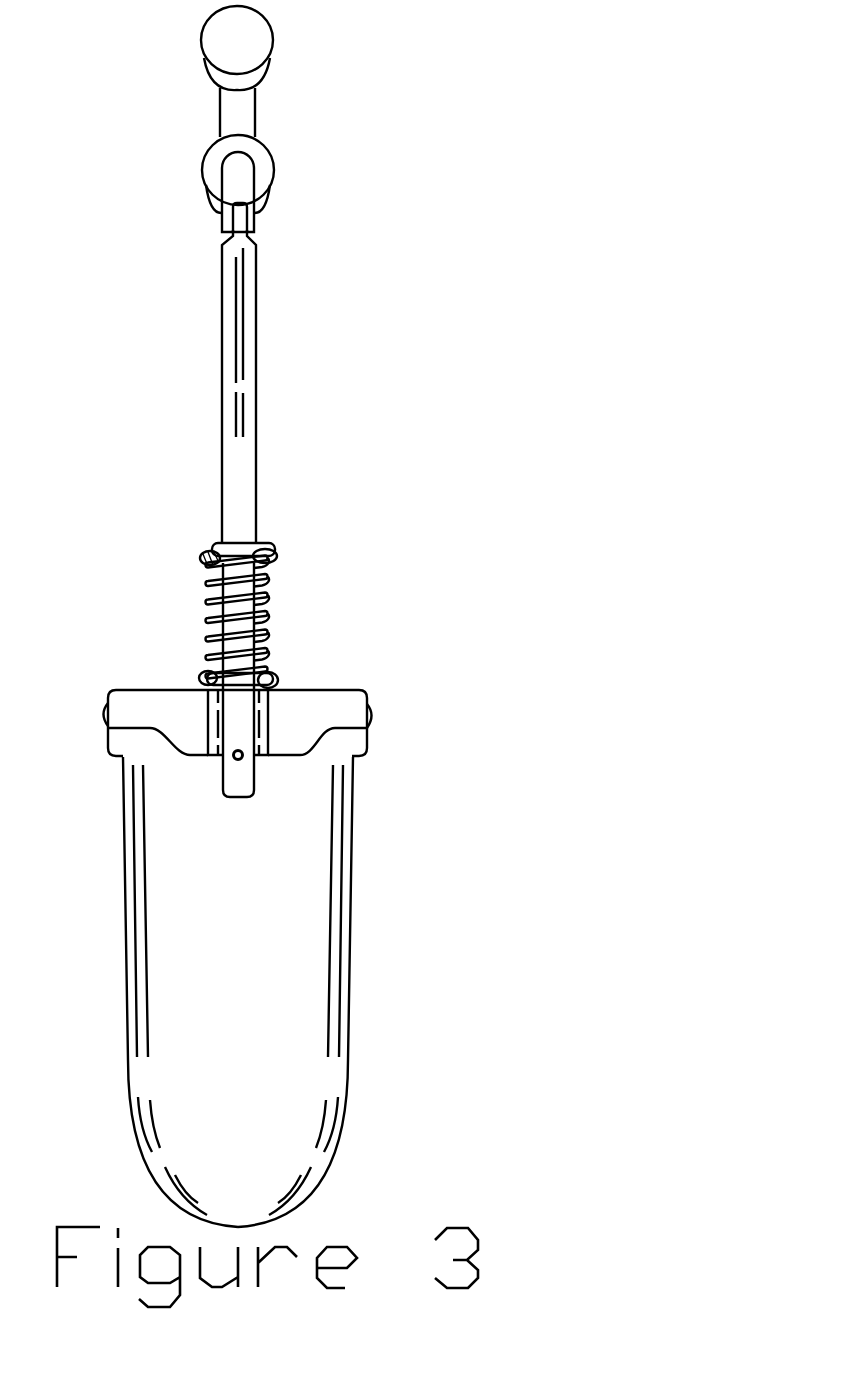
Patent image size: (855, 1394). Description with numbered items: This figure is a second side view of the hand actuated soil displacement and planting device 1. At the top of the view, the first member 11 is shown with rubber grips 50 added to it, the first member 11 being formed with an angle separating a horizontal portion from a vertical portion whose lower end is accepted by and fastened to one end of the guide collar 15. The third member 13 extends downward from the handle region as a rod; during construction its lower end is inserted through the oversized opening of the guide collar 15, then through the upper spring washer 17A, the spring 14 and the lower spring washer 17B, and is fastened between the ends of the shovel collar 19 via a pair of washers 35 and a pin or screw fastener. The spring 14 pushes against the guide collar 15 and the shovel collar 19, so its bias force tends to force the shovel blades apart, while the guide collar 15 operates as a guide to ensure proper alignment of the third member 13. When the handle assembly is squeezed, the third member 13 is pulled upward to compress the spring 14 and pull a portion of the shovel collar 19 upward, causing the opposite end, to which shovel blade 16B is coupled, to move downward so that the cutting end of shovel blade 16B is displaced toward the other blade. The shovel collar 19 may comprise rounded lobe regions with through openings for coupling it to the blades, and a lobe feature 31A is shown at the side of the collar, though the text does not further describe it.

The device 1 is at (520, 408).
The rubber grips 50 is at (247, 23).
The first member 11 is at (380, 75).
The third member 13 is at (383, 308).
The spring 14 is at (207, 613).
The guide collar 15 is at (223, 540).
The upper spring washer 17A is at (145, 540).
The lower spring washer 17B is at (203, 680).
The shovel collar 19 is at (305, 682).
The side knob 31A is at (305, 718).
The washers 35 is at (260, 713).
The shovel blade 16B is at (383, 1003).